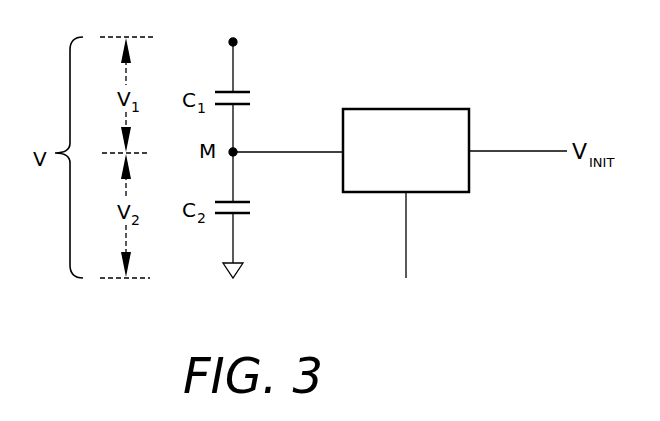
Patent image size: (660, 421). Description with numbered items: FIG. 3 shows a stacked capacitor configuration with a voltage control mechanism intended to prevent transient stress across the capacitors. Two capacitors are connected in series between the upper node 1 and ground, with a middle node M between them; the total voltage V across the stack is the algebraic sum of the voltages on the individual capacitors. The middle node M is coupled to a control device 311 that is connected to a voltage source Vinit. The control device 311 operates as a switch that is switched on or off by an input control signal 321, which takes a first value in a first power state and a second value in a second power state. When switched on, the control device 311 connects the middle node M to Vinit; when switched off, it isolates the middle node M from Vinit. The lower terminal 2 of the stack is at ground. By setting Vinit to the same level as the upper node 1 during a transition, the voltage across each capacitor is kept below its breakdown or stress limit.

The upper node 1 is at (215, 54).
The second terminal 2 is at (218, 257).
The control device 311 is at (413, 109).
The input control signal 321 is at (432, 340).